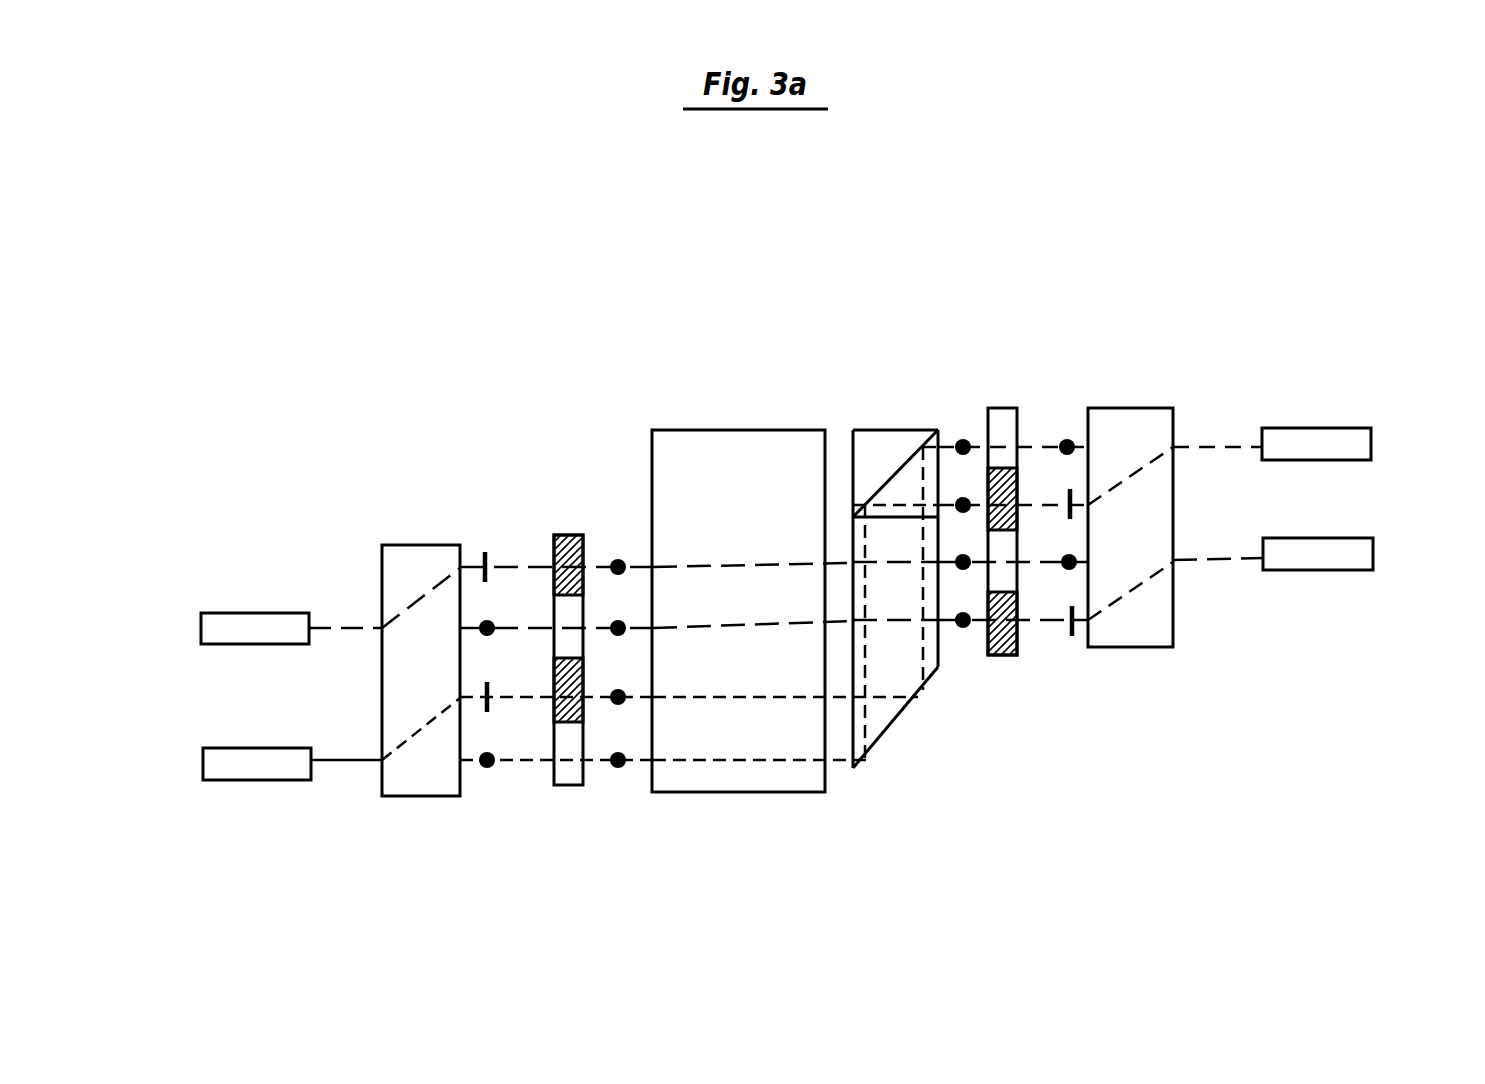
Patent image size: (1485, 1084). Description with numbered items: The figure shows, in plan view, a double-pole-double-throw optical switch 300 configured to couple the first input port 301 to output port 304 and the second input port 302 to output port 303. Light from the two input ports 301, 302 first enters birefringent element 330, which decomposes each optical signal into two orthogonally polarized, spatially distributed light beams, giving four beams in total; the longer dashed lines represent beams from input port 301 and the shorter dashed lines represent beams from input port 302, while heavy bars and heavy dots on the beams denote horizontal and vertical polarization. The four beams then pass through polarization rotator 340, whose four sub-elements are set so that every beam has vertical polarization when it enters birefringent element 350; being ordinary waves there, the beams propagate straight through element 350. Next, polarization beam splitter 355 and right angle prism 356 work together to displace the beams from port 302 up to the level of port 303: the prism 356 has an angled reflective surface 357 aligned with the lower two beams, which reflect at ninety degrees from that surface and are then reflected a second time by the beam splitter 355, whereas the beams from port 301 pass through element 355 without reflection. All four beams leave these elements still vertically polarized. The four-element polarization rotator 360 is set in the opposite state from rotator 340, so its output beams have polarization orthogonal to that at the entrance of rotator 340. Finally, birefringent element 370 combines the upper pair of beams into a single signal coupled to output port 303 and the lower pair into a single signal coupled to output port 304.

The double-pole-double-throw optical switch 300 is at (428, 348).
The input port 301 is at (250, 613).
The input port 302 is at (256, 748).
The output port 303 is at (1318, 428).
The output port 304 is at (1318, 570).
The birefringent element 330 is at (418, 545).
The polarization rotator 340 is at (565, 535).
The birefringent element 350 is at (707, 430).
The polarization beam splitter 355 is at (875, 428).
The right angle prism 356 is at (1089, 738).
The angled reflective surface 357 is at (927, 687).
The polarization rotator 360 is at (1003, 408).
The birefringent element 370 is at (1135, 408).